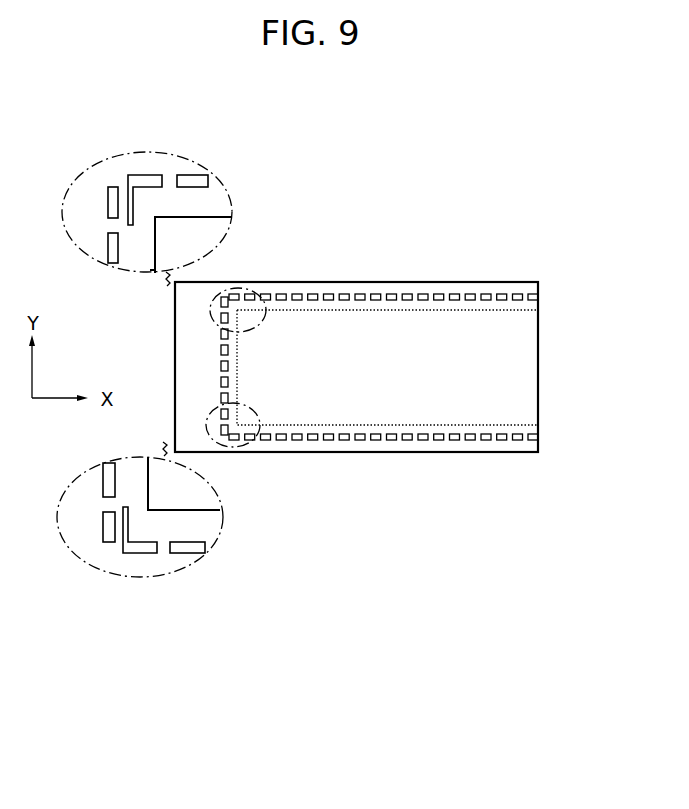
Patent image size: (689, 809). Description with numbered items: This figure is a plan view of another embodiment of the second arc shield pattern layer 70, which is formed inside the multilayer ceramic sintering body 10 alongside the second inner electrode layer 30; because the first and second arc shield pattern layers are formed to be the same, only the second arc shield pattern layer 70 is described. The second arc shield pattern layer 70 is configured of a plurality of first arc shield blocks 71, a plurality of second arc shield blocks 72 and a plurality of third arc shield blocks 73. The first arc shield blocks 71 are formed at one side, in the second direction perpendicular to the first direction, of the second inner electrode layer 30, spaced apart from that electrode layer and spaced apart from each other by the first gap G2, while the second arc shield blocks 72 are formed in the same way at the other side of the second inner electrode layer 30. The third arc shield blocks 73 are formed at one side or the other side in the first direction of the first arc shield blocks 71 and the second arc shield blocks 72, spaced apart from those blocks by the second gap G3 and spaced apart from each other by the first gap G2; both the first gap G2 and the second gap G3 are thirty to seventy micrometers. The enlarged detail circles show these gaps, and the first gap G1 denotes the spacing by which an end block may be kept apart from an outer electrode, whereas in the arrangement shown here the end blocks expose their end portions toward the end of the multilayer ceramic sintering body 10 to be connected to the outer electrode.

The multilayer ceramic sintering body 10 is at (190, 350).
The second inner electrode layer 30 is at (512, 370).
The second arc shield pattern layer 70 is at (297, 282).
The first arc shield blocks 71 is at (138, 175).
The second arc shield blocks 72 is at (263, 441).
The third arc shield blocks 73 is at (110, 195).
The first gap G1 is at (197, 598).
The first gap G2 is at (202, 133).
The second gap G3 is at (88, 208).